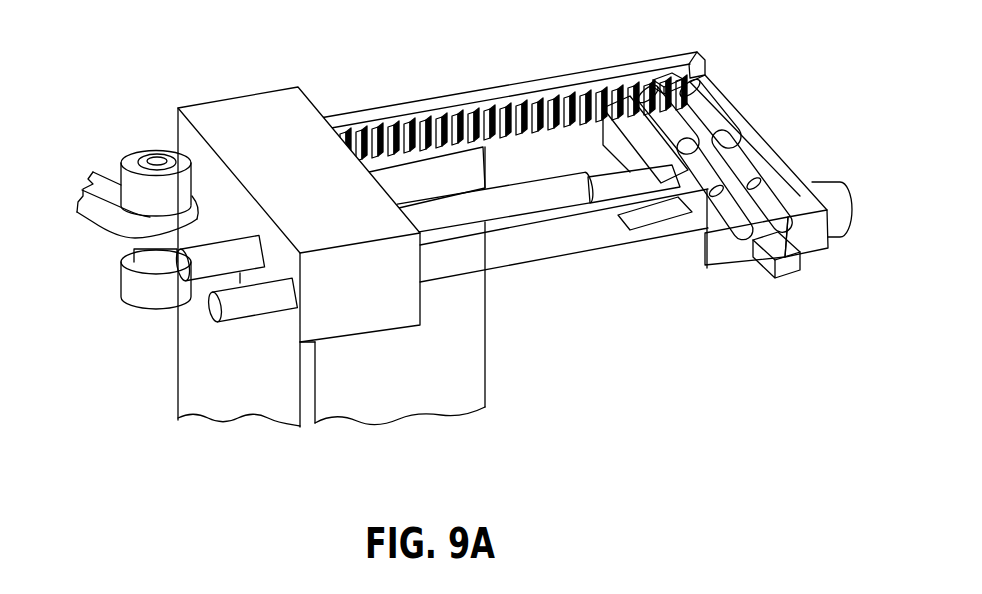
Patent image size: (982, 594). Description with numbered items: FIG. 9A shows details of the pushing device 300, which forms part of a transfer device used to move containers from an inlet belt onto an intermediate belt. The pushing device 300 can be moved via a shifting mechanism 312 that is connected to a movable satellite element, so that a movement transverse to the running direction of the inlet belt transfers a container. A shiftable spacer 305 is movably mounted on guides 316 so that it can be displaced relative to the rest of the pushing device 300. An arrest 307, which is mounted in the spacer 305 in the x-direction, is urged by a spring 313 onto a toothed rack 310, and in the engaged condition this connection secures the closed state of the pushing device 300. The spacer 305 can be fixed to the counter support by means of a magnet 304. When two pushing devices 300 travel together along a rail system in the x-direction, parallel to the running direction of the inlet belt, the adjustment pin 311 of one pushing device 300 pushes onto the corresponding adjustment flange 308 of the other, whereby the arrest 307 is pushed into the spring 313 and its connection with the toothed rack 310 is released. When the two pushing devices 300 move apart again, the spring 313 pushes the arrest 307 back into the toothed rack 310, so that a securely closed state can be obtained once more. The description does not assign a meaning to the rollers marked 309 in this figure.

The pushing device 300 is at (295, 68).
The magnet 304 is at (838, 224).
The spacer 305 is at (757, 133).
The arrest 307 is at (703, 73).
The adjustment flange 308 is at (663, 67).
The lower rollers 309 is at (760, 173).
The toothed rack 310 is at (478, 102).
The adjustment pin 311 is at (790, 274).
The shifting mechanism 312 is at (80, 161).
The spring 313 is at (720, 117).
The guides 316 is at (553, 241).